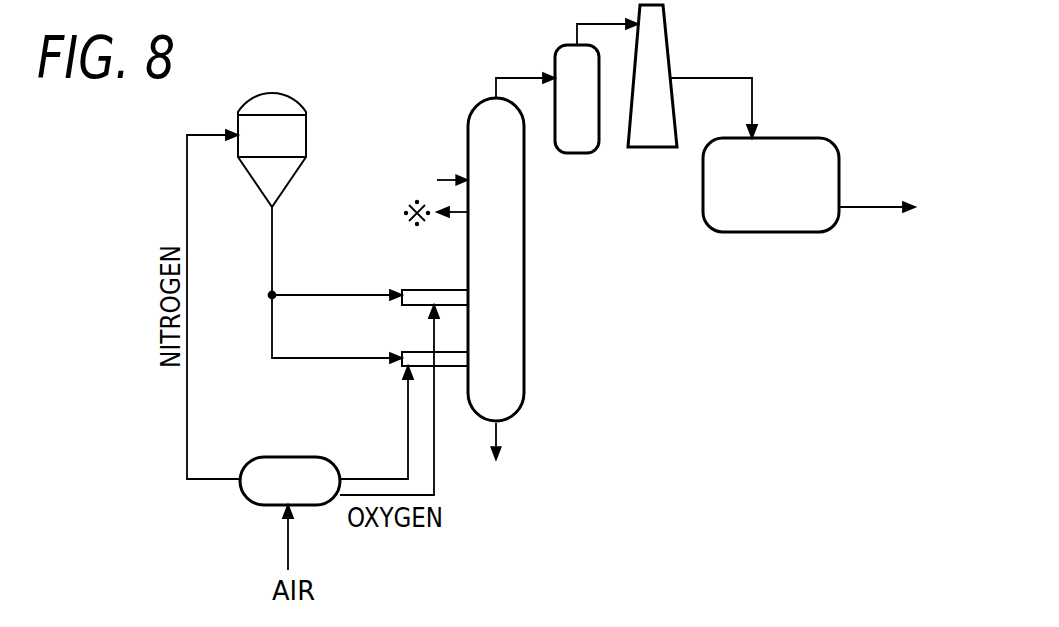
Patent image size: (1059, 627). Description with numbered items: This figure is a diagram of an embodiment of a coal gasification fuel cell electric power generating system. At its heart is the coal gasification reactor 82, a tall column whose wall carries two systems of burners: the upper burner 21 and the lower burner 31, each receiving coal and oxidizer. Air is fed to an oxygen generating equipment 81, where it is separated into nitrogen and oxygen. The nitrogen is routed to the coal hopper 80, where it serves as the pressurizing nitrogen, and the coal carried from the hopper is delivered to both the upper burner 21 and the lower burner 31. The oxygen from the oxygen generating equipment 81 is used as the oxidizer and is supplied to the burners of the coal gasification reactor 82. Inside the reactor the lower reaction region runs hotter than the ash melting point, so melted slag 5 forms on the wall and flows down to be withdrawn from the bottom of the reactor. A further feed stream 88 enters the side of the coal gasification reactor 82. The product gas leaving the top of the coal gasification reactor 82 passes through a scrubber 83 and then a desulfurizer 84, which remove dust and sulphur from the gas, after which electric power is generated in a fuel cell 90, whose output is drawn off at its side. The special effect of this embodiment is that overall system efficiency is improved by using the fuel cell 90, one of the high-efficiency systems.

The melted slag 5 is at (498, 459).
The upper burner 21 is at (425, 290).
The lower burner 31 is at (420, 352).
The coal hopper 80 is at (286, 93).
The oxygen generating equipment 81 is at (252, 505).
The coal gasification reactor 82 is at (524, 304).
The scrubber 83 is at (573, 153).
The desulfurizer 84 is at (652, 147).
The feed inlet 88 is at (440, 184).
The fuel cell 90 is at (748, 232).